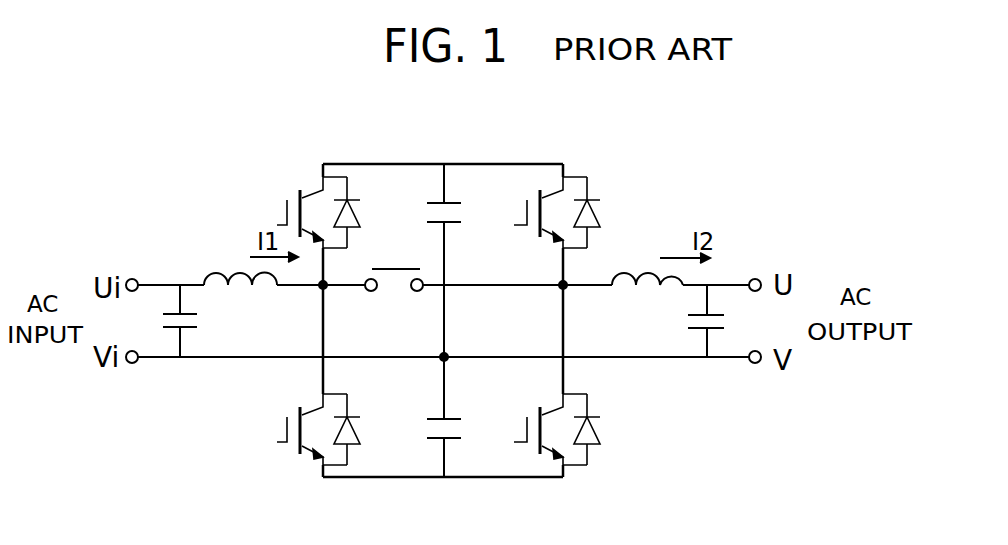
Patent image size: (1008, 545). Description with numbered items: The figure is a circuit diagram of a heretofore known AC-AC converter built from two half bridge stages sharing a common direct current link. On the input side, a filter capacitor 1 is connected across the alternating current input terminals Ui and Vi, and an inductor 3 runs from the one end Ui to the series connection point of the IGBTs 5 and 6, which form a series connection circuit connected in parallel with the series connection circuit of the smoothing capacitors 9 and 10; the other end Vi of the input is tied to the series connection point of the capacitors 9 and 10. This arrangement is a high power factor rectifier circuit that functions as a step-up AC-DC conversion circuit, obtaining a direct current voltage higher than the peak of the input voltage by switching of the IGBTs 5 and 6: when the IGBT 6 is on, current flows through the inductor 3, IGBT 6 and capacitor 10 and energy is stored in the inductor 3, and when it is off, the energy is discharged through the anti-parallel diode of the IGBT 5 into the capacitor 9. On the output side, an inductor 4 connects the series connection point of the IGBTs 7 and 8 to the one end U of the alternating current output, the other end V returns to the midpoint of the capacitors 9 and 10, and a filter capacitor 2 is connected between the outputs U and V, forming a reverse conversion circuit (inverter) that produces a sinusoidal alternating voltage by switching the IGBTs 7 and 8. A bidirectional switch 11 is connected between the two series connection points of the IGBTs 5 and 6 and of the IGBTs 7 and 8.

The filter capacitor 1 is at (173, 295).
The filter capacitor 2 is at (723, 297).
The inductor 3 is at (248, 263).
The inductor 4 is at (628, 265).
The IGBT 5 is at (278, 208).
The IGBT 6 is at (278, 427).
The IGBT 7 is at (602, 212).
The IGBT 8 is at (605, 432).
The smoothing capacitor 9 is at (430, 185).
The smoothing capacitor 10 is at (427, 413).
The bidirectional switch 11 is at (408, 297).